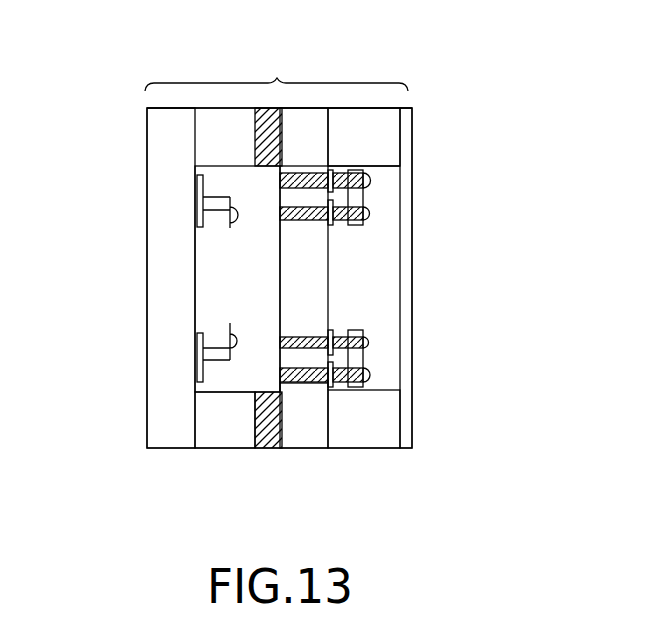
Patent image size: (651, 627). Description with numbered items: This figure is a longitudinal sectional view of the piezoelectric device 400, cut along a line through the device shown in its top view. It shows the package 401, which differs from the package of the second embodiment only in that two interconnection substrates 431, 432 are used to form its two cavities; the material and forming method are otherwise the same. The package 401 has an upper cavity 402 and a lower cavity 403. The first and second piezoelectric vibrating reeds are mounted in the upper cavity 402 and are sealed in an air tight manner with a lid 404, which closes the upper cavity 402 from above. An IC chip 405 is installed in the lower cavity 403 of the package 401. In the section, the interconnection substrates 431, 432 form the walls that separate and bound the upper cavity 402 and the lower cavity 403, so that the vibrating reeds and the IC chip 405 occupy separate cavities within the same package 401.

The piezoelectric device 400 is at (468, 46).
The package 401 is at (278, 80).
The upper cavity 402 is at (368, 440).
The lower cavity 403 is at (228, 440).
The lid 404 is at (405, 280).
The IC chip 405 is at (210, 274).
The interconnection substrate 431 is at (155, 185).
The interconnection substrate 432 is at (305, 440).